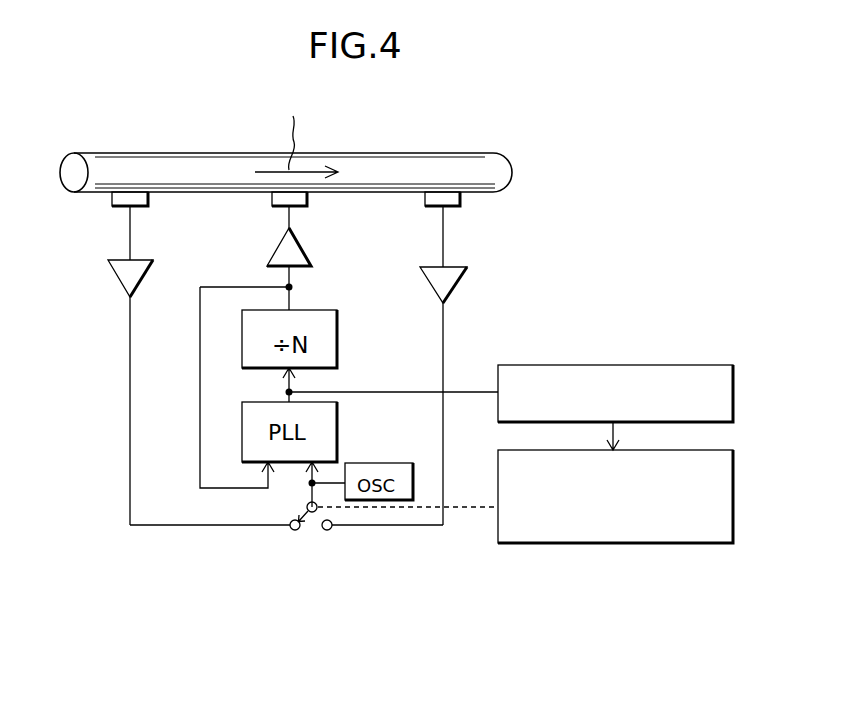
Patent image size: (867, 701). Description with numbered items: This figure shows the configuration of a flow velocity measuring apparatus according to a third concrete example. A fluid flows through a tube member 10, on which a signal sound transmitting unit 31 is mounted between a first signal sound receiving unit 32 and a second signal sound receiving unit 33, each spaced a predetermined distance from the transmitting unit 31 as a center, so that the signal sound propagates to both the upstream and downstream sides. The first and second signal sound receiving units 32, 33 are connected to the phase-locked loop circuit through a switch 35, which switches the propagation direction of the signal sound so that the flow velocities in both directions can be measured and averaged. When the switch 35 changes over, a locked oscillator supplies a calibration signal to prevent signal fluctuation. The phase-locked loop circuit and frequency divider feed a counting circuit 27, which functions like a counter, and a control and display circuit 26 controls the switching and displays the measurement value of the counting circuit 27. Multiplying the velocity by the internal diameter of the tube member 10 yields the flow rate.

The tube member 10 is at (436, 153).
The control and display circuit 26 is at (716, 545).
The counting circuit 27 is at (706, 365).
The signal sound transmitting unit 31 is at (280, 206).
The first signal sound receiving unit 32 is at (122, 206).
The second signal sound receiving unit 33 is at (435, 206).
The switch 35 is at (304, 530).